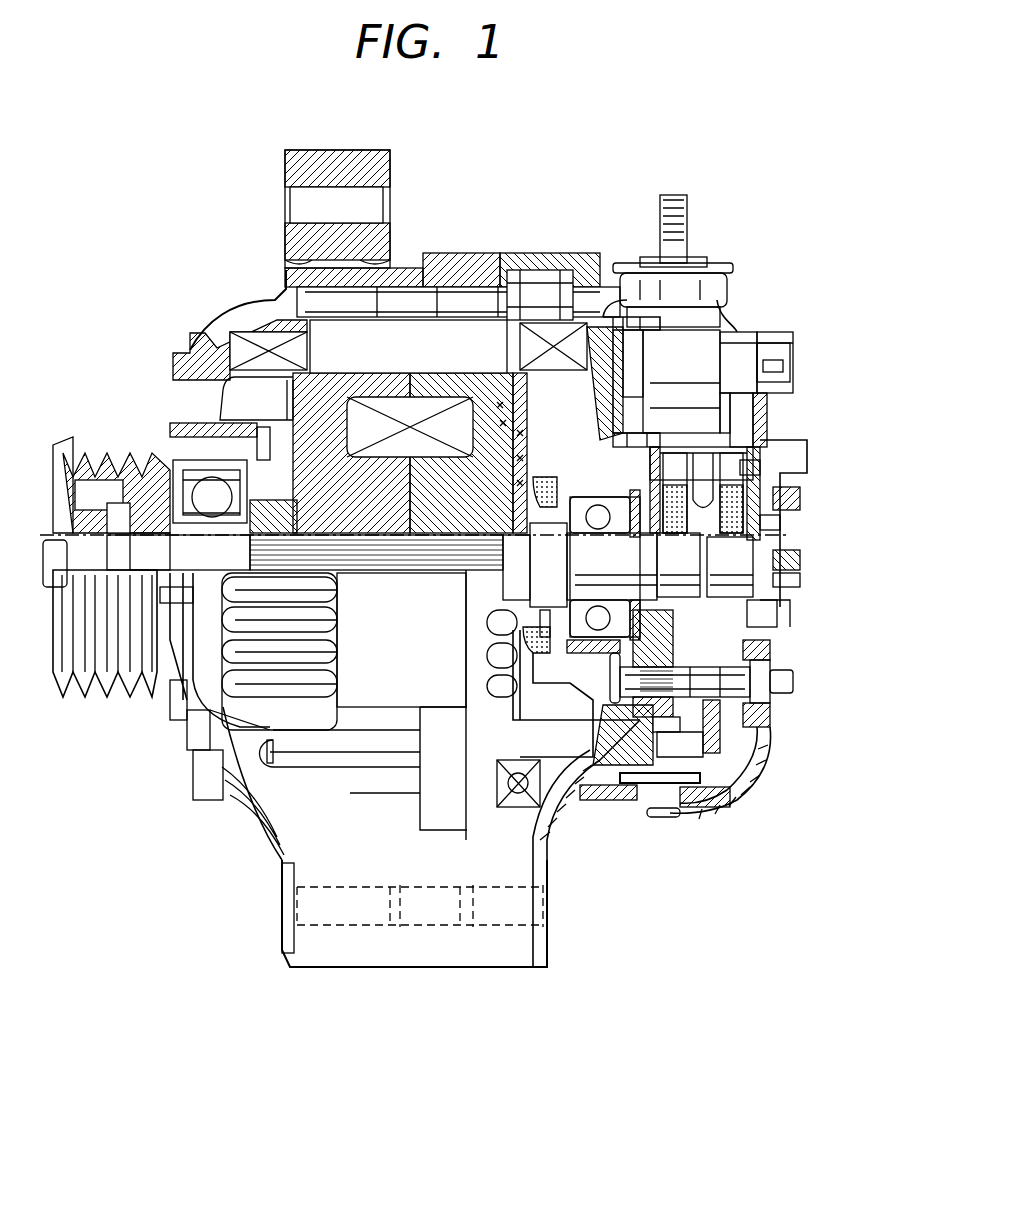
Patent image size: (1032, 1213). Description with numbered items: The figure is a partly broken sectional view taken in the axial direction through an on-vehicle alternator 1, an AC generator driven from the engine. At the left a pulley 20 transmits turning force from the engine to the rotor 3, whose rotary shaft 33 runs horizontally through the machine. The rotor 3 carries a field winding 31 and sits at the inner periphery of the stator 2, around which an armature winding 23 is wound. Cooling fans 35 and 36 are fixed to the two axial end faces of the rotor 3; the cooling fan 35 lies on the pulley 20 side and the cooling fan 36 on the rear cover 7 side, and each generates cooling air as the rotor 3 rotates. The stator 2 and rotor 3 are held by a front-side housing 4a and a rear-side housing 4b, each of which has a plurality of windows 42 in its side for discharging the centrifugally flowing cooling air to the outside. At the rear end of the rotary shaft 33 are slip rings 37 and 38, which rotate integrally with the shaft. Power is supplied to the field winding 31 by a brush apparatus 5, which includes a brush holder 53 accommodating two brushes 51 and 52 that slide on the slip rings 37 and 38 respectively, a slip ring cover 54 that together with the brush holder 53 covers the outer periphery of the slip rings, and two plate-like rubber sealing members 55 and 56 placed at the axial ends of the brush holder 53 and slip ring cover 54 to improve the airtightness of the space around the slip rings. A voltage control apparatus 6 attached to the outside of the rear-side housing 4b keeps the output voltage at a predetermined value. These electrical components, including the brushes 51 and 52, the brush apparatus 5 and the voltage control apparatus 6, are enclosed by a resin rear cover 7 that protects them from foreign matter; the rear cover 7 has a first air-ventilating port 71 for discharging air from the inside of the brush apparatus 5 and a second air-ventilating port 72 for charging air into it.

The on-vehicle alternator 1 is at (751, 207).
The stator 2 is at (553, 334).
The rotor 3 is at (268, 396).
The front-side housing 4a is at (316, 952).
The rear-side housing 4b is at (545, 947).
The brush apparatus 5 is at (679, 436).
The voltage control apparatus 6 is at (742, 333).
The rear cover 7 is at (765, 745).
The pulley 20 is at (62, 448).
The armature winding 23 is at (625, 297).
The field winding 31 is at (413, 418).
The rotary shaft 33 is at (115, 462).
The cooling fan 35 is at (250, 400).
The cooling fan 36 is at (590, 382).
The slip ring 37 is at (758, 605).
The slip ring 38 is at (722, 578).
The windows 42 is at (262, 688).
The brush 51 is at (700, 483).
The brush 52 is at (790, 503).
The brush holder 53 is at (742, 470).
The slip ring cover 54 is at (735, 640).
The sealing member 55 is at (655, 443).
The sealing member 56 is at (762, 520).
The first air-ventilating port 71 is at (795, 572).
The second air-ventilating port 72 is at (798, 508).